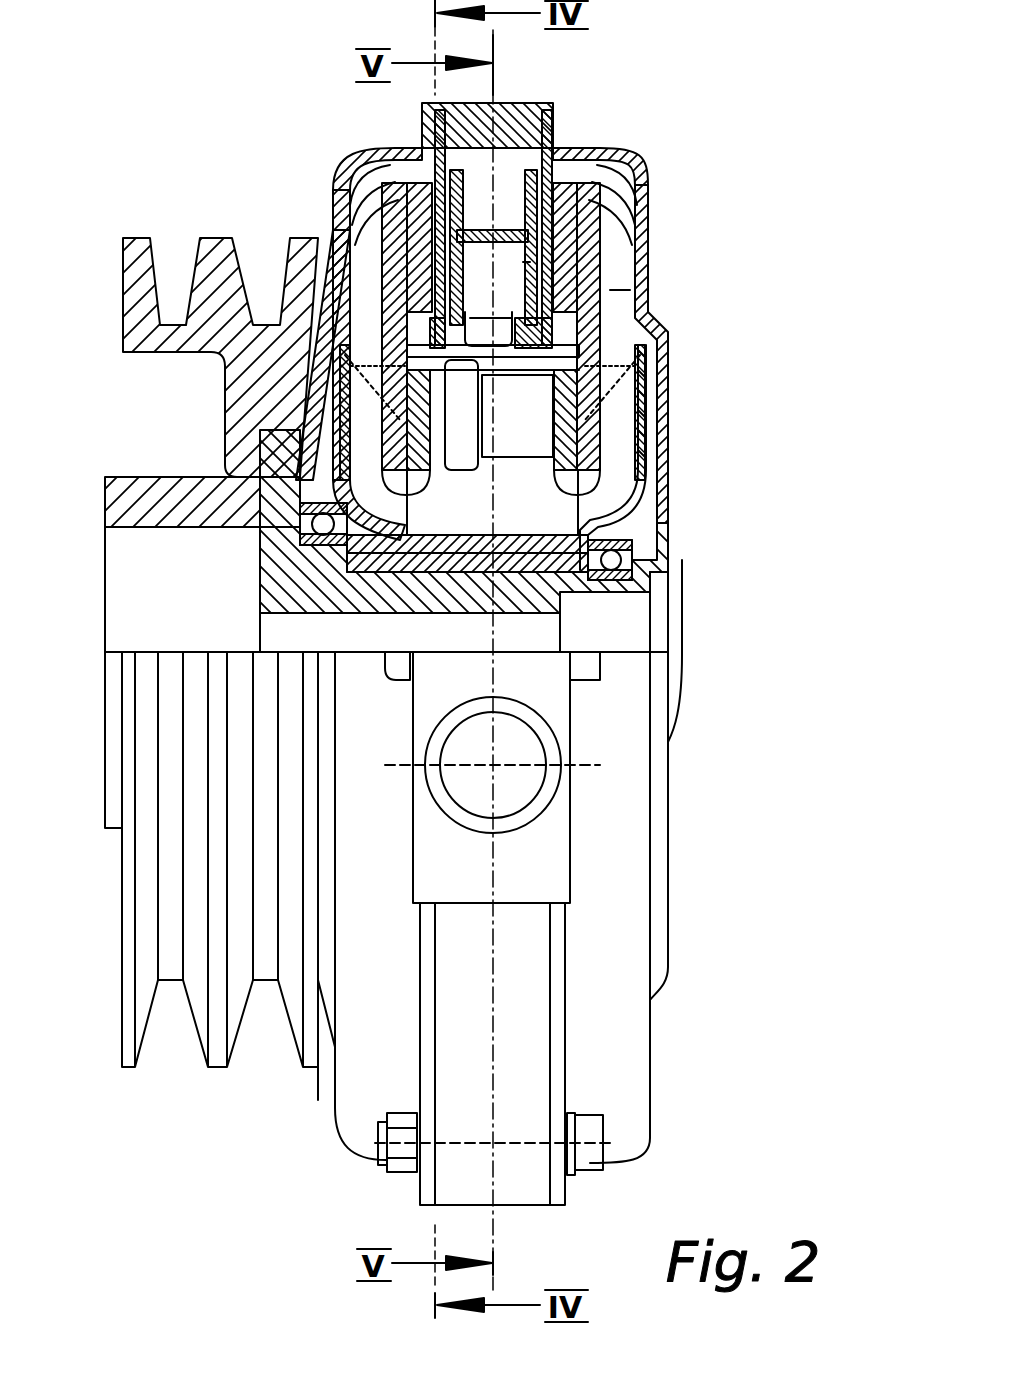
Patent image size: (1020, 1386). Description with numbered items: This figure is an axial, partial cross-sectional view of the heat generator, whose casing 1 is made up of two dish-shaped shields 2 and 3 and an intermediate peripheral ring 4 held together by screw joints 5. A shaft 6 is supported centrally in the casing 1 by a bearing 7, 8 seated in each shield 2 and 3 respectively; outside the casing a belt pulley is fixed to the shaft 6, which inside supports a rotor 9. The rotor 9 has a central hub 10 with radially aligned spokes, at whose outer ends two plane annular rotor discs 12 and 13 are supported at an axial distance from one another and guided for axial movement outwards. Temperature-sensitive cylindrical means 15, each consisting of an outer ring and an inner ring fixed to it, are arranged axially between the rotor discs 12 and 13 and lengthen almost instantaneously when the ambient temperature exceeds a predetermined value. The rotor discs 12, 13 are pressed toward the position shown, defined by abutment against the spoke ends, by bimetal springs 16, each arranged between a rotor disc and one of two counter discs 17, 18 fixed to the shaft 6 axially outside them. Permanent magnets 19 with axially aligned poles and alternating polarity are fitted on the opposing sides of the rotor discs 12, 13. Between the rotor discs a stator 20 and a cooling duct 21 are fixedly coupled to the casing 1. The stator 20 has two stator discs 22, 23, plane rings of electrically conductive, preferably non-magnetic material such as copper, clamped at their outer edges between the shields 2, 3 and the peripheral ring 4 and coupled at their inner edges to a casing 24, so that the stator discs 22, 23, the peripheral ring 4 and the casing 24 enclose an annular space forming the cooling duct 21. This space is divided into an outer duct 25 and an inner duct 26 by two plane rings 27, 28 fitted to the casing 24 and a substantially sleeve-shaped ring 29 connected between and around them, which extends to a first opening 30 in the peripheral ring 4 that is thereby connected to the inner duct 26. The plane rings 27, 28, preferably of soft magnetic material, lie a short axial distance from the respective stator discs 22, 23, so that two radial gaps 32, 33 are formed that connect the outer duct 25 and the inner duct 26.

The casing 1 is at (676, 910).
The dish-shaped shield 2 is at (353, 1112).
The dish-shaped shield 3 is at (645, 1064).
The peripheral ring 4 is at (520, 1188).
The screw joint 5 is at (590, 1160).
The shaft 6 is at (300, 572).
The bearing 7 is at (300, 546).
The bearing 8 is at (640, 528).
The rotor 9 is at (614, 240).
The central hub 10 is at (493, 535).
The rotor disc 12 is at (386, 183).
The rotor disc 13 is at (603, 176).
The temperature-sensitive cylindrical means 15 is at (528, 440).
The bimetal spring 16 is at (352, 350).
The counter disc 17 is at (340, 418).
The counter disc 18 is at (650, 389).
The permanent magnet 19 is at (432, 142).
The stator 20 is at (510, 158).
The cooling duct 21 is at (630, 290).
The stator disc 22 is at (372, 165).
The stator disc 23 is at (620, 165).
The casing 24 is at (522, 350).
The outer duct 25 is at (470, 218).
The inner duct 26 is at (512, 313).
The plane ring 27 is at (370, 215).
The plane ring 28 is at (625, 258).
The sleeve-shaped ring 29 is at (530, 280).
The first opening 30 is at (527, 750).
The radial gap 32 is at (375, 190).
The radial gap 33 is at (640, 192).